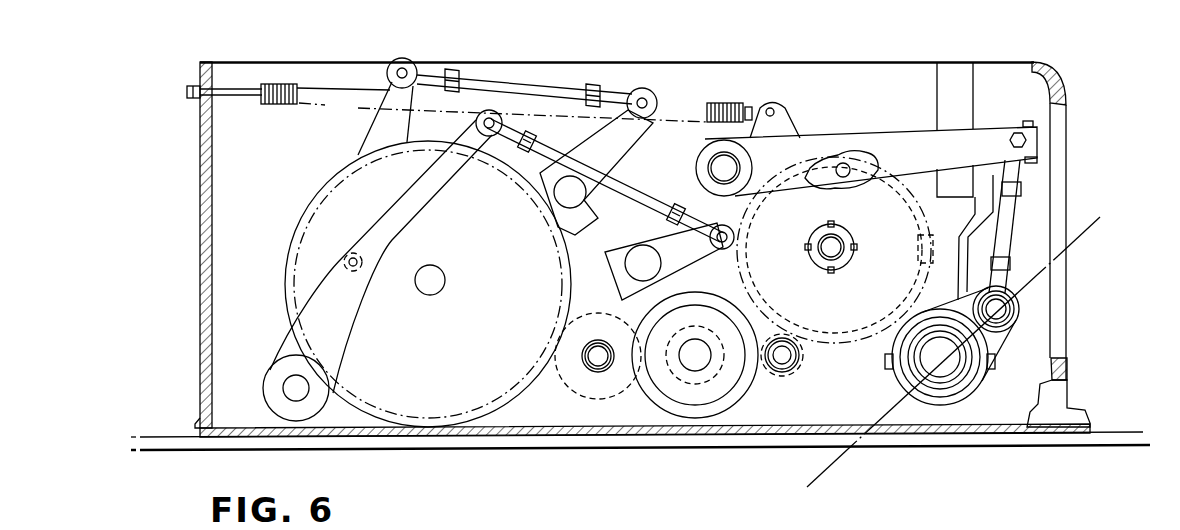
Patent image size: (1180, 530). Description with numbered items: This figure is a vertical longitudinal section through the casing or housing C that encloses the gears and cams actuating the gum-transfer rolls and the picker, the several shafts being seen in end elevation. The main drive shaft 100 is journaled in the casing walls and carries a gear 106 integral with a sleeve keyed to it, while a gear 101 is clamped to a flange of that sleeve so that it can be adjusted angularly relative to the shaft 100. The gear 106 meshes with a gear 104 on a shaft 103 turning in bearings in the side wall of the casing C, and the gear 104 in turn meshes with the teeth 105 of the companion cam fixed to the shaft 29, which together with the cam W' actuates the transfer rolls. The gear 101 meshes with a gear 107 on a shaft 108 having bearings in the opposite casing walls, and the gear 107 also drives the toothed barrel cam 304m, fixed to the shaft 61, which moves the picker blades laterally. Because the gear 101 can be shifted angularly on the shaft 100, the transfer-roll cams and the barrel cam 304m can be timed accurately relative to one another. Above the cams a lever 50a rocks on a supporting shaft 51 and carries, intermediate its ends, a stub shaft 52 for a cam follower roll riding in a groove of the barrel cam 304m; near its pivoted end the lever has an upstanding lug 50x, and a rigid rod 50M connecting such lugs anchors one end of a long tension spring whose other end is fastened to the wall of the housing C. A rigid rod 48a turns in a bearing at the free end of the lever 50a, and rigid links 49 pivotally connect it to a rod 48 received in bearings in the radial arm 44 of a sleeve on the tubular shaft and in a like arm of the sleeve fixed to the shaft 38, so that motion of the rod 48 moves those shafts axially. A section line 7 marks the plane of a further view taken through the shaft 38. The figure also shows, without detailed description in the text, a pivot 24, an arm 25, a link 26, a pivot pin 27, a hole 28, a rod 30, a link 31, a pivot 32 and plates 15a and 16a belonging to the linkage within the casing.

The casing C is at (202, 170).
The cam W' is at (421, 284).
The section line 7- 7 is at (951, 356).
The plate 15a is at (572, 195).
The lever plate 16a is at (643, 258).
The pivot 24 is at (298, 388).
The arm 25 is at (410, 222).
The link rod 26 is at (625, 186).
The pivot pin 27 is at (688, 259).
The hole 28 is at (345, 258).
The shaft 29 is at (437, 283).
The rod 30 is at (502, 105).
The link 31 is at (557, 90).
The pivot 32 is at (657, 125).
The shaft 38 is at (955, 363).
The radial arm 44 is at (990, 338).
The rigid rod 48 is at (1000, 312).
The rigid rod 48a is at (1025, 140).
The rigid link 49 is at (1013, 221).
The rigid rod 50M is at (770, 104).
The upstanding lug 50x is at (780, 128).
The lever 50a is at (911, 137).
The supporting shaft 51 is at (718, 164).
The stub shaft 52 is at (848, 160).
The shaft 61 is at (838, 238).
The main drive shaft 100 is at (697, 368).
The gear 101 is at (645, 415).
The shaft 103 is at (595, 372).
The gear 104 is at (565, 378).
The teeth 105 is at (482, 422).
The gear 106 is at (707, 405).
The gear 107 is at (785, 364).
The shaft 108 is at (790, 367).
The barrel cam 304m is at (840, 342).